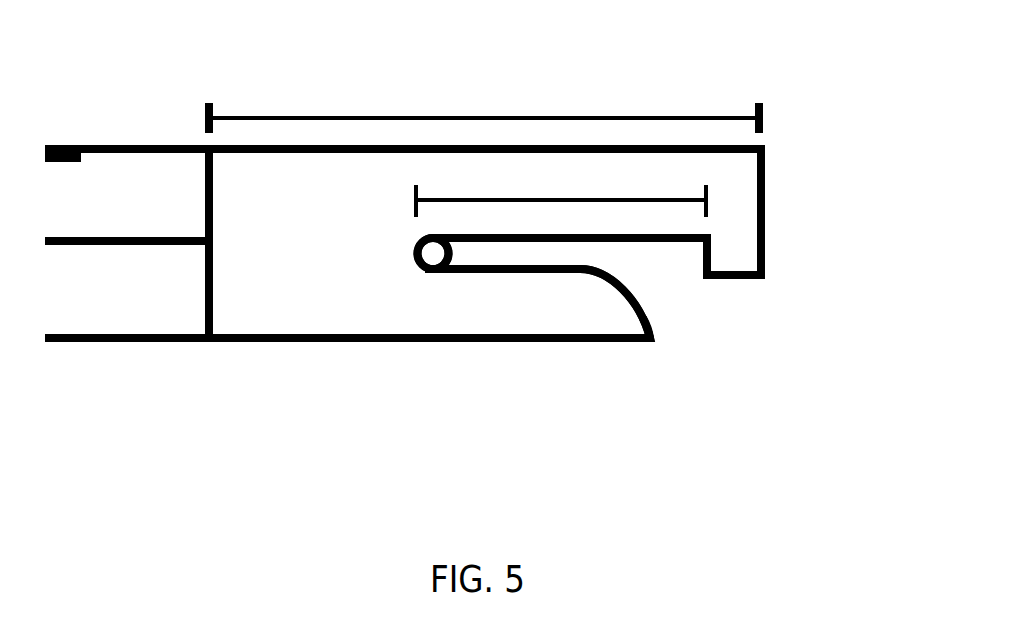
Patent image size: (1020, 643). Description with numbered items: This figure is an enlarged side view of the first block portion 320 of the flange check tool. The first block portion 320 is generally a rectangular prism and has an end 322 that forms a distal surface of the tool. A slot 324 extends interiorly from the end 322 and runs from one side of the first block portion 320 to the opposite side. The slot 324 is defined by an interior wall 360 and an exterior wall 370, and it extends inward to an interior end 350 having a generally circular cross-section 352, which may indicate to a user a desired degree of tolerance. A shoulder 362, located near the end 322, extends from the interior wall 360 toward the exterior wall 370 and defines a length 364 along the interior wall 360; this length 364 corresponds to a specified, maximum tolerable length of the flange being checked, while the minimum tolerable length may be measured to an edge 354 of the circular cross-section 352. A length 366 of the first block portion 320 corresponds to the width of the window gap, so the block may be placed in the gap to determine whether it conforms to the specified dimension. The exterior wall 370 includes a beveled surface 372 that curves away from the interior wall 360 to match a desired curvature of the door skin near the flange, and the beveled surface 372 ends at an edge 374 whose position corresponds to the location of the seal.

The first block portion 320 is at (403, 55).
The end 322 is at (765, 205).
The slot 324 is at (675, 317).
The interior end 350 is at (417, 260).
The circular cross-section 352 is at (435, 275).
The edge 354 is at (458, 272).
The interior wall 360 is at (673, 242).
The shoulder 362 is at (723, 276).
The length 364 is at (608, 200).
The length 366 is at (318, 117).
The exterior wall 370 is at (528, 273).
The beveled surface 372 is at (620, 290).
The edge 374 is at (645, 342).